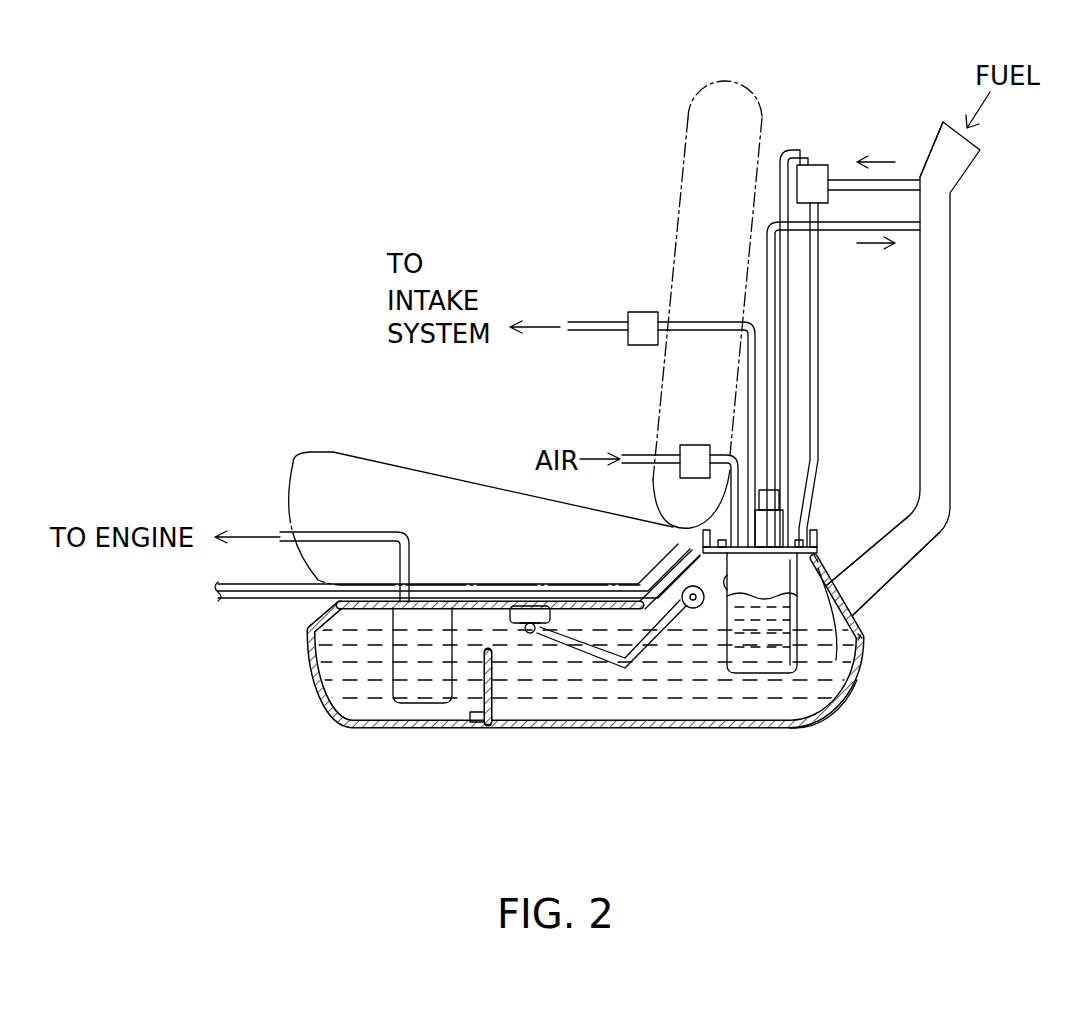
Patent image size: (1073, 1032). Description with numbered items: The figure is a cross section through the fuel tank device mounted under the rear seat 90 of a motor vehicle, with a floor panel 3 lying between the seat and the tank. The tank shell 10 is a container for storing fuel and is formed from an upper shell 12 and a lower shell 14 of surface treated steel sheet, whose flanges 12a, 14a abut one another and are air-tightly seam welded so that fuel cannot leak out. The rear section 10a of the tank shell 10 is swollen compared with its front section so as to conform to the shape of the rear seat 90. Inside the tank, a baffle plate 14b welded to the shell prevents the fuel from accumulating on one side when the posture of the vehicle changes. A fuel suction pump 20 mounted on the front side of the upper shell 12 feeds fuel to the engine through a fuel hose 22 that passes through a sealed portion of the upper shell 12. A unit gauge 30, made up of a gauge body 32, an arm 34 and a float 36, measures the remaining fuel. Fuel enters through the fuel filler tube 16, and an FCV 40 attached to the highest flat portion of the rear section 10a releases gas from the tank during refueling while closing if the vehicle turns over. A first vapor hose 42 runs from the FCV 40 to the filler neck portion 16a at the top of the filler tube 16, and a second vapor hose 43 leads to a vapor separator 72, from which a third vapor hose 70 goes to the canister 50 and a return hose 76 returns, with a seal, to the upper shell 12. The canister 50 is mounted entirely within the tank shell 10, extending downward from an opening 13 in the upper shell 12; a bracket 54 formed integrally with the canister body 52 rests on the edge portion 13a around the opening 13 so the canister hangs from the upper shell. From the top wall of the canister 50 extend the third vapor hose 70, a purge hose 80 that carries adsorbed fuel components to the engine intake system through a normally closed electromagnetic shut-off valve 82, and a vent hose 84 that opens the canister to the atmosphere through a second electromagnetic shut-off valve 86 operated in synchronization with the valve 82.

The floor panel 3 is at (248, 603).
The tank shell 10 is at (312, 672).
The rear section of the tank shell 10a is at (820, 560).
The upper shell 12 is at (845, 611).
The flange of the upper shell 12a is at (866, 633).
The opening of the upper shell 13 is at (712, 606).
The edge portion around the opening 13a is at (836, 672).
The lower shell 14 is at (851, 672).
The flange of the lower shell 14a is at (866, 636).
The baffle plate 14b is at (482, 668).
The fuel filler tube 16 is at (950, 295).
The filler neck portion 16a is at (950, 222).
The fuel suction pump 20 is at (392, 668).
The fuel hose 22 is at (297, 534).
The unit gauge 30 is at (551, 594).
The gauge body 32 is at (517, 604).
The arm 34 is at (562, 640).
The float 36 is at (684, 585).
The FCV 40 is at (788, 478).
The first vapor hose 42 is at (762, 252).
The second vapor hose 43 is at (846, 180).
The canister 50 is at (748, 678).
The canister body 52 is at (777, 660).
The bracket 54 is at (818, 532).
The third vapor hose 70 is at (790, 370).
The vapor separator 72 is at (812, 163).
The return hose 76 is at (820, 287).
The purge hose 80 is at (748, 380).
The electromagnetic shut-off valve 82 is at (640, 312).
The vent hose 84 is at (730, 491).
The electromagnetic shut-off valve 86 is at (690, 445).
The rear seat 90 is at (343, 450).